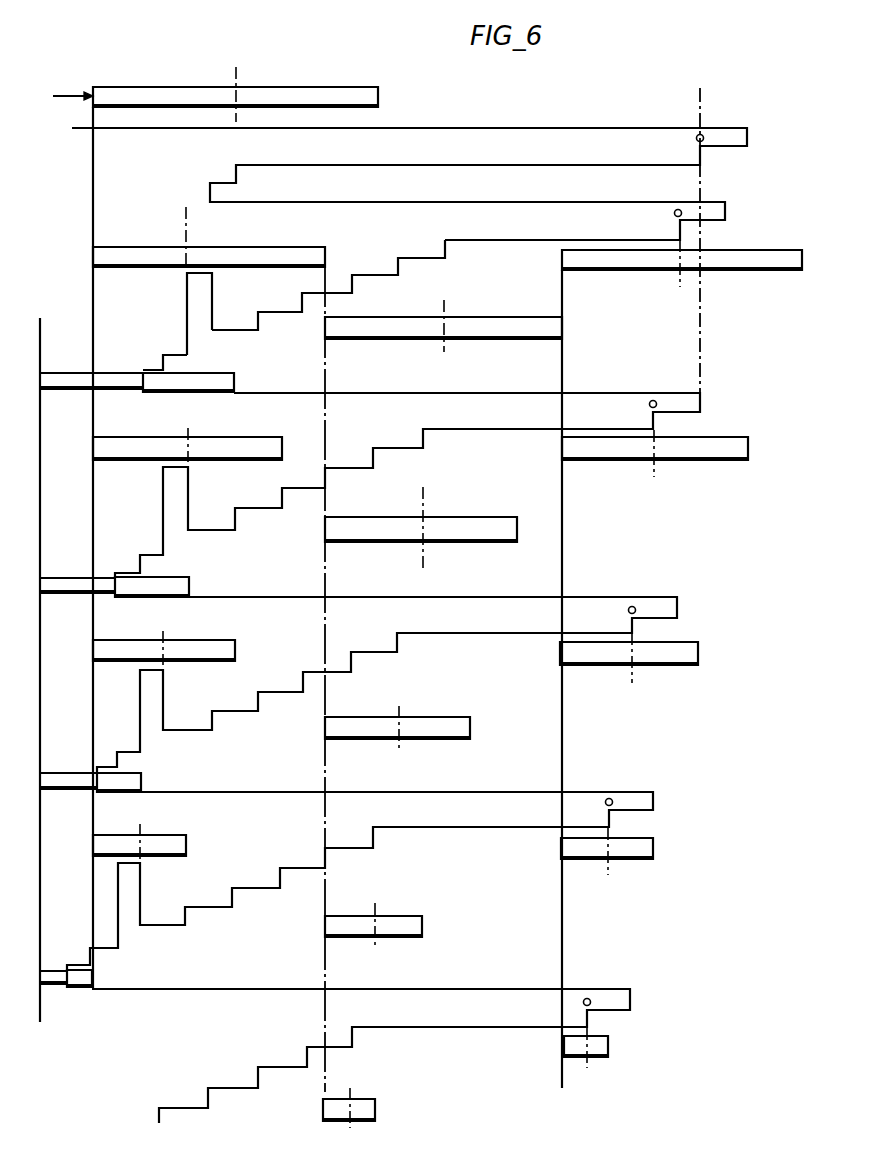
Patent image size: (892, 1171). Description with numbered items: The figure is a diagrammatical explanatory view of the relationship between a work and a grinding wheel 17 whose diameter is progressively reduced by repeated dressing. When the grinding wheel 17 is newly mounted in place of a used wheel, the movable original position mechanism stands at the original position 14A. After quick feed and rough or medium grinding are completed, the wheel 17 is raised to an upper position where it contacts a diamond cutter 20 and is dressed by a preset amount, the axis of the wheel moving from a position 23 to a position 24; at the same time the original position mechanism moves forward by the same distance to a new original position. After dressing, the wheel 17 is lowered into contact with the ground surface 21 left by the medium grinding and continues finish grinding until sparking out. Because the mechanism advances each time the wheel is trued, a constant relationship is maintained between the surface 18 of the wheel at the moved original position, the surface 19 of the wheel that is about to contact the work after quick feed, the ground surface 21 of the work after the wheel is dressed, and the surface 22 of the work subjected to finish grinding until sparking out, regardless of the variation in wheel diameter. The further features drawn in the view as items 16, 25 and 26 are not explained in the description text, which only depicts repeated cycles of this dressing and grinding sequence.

The original position 14A is at (731, 248).
The pivot point 16 is at (704, 141).
The grinding wheel 17 is at (378, 98).
The surface of the wheel 18 is at (563, 276).
The surface of the wheel 19 is at (327, 374).
The diamond cutter 20 is at (68, 96).
The ground surface 21 is at (95, 190).
The surface of the work 22 is at (40, 328).
The position 23 is at (213, 288).
The position 24 is at (185, 292).
The stepped path 25 is at (447, 242).
The block 26 is at (140, 378).